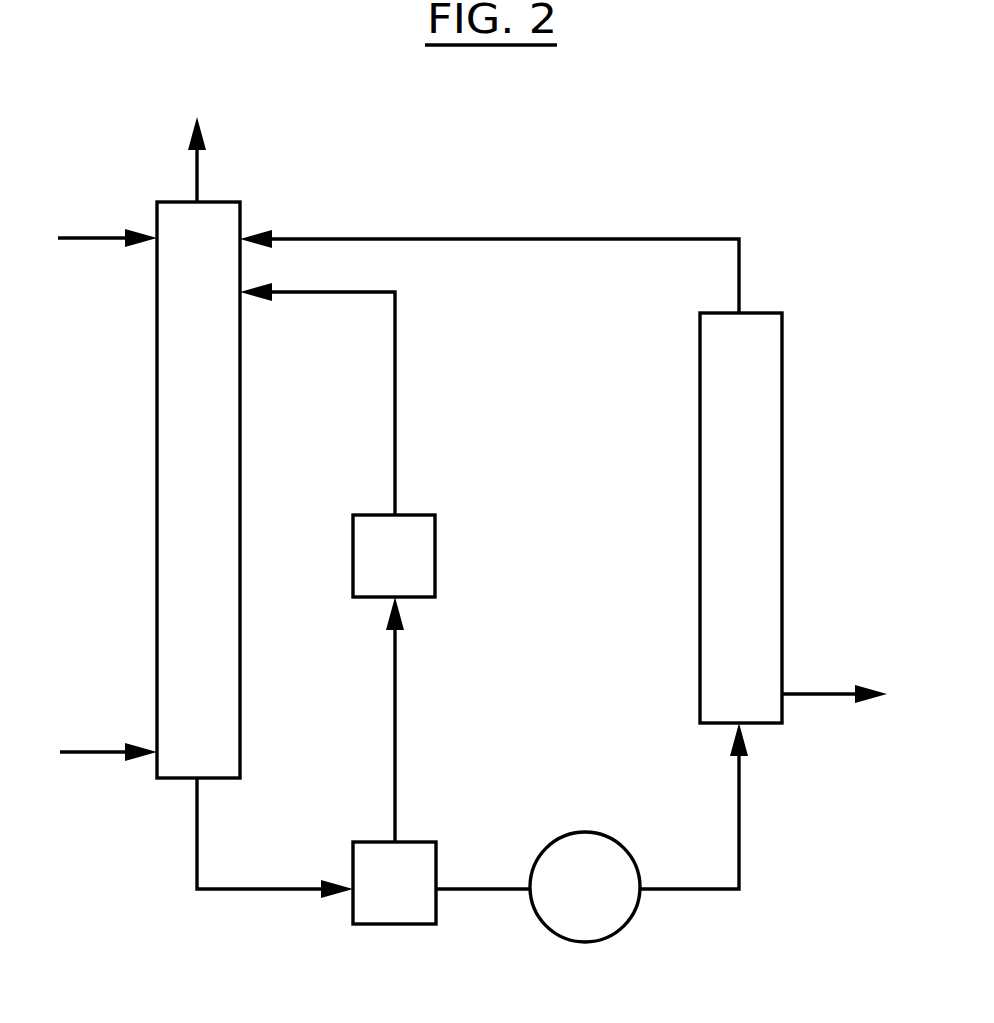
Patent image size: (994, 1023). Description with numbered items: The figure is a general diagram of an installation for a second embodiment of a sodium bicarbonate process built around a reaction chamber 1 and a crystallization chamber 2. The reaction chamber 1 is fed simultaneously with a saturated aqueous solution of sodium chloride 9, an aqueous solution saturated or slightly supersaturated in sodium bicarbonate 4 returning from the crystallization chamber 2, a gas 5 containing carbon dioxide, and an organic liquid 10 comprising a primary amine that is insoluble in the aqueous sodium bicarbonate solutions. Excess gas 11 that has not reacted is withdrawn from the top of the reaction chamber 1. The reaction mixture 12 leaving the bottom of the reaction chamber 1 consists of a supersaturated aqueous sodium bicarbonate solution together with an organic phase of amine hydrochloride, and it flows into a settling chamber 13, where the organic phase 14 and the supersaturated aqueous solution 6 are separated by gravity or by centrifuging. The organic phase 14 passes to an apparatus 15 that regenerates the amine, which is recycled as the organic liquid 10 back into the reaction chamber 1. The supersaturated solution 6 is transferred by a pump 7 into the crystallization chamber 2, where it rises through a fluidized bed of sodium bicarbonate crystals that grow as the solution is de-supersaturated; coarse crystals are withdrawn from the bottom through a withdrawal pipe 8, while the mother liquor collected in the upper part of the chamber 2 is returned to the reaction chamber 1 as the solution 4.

The reaction chamber 1 is at (157, 500).
The crystallization chamber 2 is at (782, 428).
The aqueous solution saturated in sodium bicarbonate 4 is at (440, 239).
The gas containing carbon dioxide 5 is at (92, 755).
The supersaturated aqueous solution of sodium bicarbonate 6 is at (712, 893).
The pump 7 is at (585, 916).
The withdrawal pipe 8 is at (808, 697).
The saturated aqueous solution of sodium chloride 9 is at (82, 236).
The organic liquid 10 is at (398, 385).
The excess gas 11 is at (199, 178).
The reaction mixture 12 is at (300, 895).
The settling chamber 13 is at (418, 926).
The organic phase of amine hydrochloride 14 is at (397, 752).
The apparatus 15 is at (437, 560).